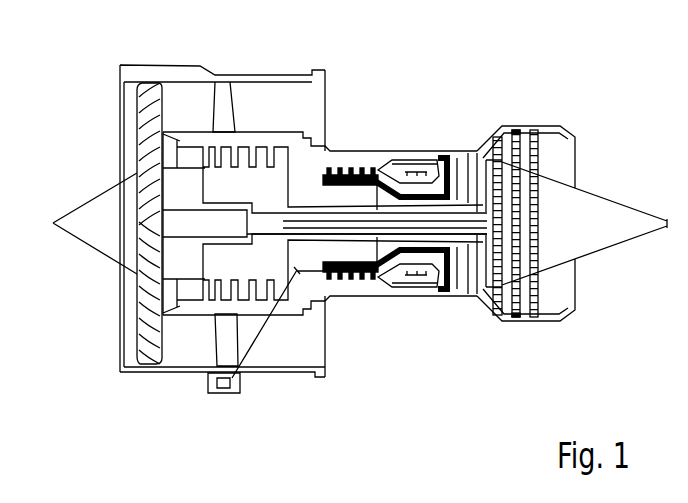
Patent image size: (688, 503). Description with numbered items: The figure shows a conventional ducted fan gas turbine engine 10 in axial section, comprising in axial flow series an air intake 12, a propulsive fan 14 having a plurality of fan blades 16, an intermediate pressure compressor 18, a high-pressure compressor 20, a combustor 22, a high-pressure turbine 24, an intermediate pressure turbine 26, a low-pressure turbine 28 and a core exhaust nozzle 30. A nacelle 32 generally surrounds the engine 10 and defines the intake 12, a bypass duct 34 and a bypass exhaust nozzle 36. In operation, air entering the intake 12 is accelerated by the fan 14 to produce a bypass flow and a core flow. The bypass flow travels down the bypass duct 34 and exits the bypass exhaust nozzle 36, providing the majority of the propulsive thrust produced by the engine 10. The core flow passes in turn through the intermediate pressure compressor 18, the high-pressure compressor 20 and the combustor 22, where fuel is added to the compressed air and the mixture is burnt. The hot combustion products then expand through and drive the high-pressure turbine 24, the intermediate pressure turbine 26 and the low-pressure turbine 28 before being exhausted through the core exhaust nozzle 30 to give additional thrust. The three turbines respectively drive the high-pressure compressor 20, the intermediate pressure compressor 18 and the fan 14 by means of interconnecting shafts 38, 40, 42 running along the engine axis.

The ducted fan gas turbine engine 10 is at (490, 80).
The air intake 12 is at (100, 328).
The propulsive fan 14 is at (143, 365).
The fan blades 16 is at (143, 318).
The intermediate pressure compressor 18 is at (217, 150).
The high-pressure compressor 20 is at (342, 281).
The combustor 22 is at (417, 292).
The high-pressure turbine 24 is at (448, 297).
The intermediate pressure turbine 26 is at (480, 300).
The low-pressure turbine 28 is at (520, 317).
The core exhaust nozzle 30 is at (584, 293).
The nacelle 32 is at (206, 72).
The bypass duct 34 is at (280, 100).
The bypass exhaust nozzle 36 is at (318, 106).
The interconnecting shaft 38 is at (307, 220).
The interconnecting shaft 40 is at (377, 168).
The interconnecting shaft 42 is at (417, 190).